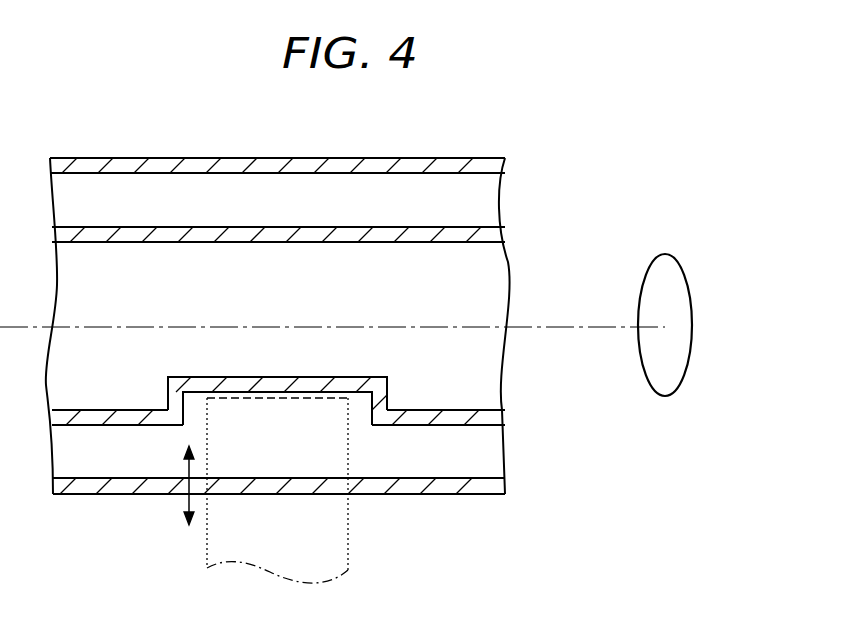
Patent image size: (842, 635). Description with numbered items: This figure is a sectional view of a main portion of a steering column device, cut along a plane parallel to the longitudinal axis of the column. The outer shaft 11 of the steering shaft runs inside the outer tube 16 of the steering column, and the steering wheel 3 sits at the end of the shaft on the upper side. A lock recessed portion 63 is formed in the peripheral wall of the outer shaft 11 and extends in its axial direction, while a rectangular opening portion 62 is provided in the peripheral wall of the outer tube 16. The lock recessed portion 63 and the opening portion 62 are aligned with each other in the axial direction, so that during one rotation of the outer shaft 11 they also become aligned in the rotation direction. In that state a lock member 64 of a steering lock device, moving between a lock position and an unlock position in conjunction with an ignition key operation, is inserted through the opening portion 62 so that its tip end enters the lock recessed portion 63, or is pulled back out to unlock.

The steering wheel 3 is at (694, 262).
The outer shaft 11 is at (138, 226).
The outer tube 16 is at (458, 157).
The opening portion 62 is at (388, 479).
The lock recessed portion 63 is at (364, 394).
The lock member 64 is at (207, 546).